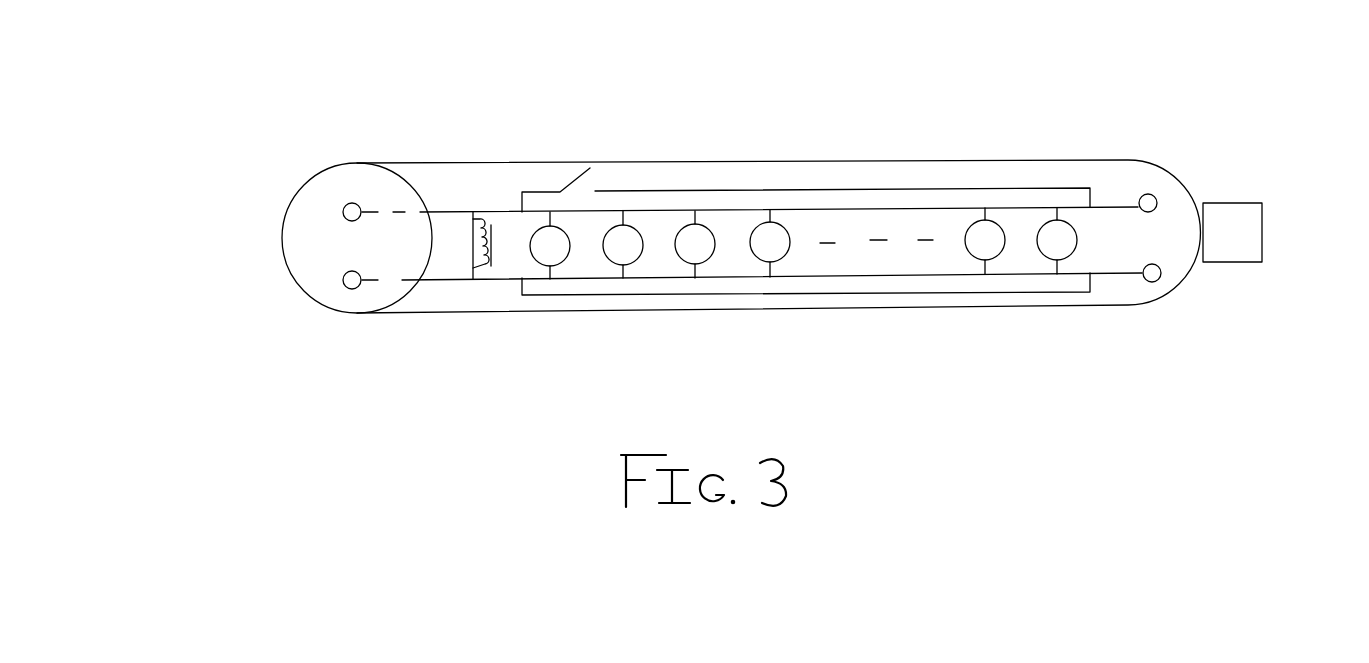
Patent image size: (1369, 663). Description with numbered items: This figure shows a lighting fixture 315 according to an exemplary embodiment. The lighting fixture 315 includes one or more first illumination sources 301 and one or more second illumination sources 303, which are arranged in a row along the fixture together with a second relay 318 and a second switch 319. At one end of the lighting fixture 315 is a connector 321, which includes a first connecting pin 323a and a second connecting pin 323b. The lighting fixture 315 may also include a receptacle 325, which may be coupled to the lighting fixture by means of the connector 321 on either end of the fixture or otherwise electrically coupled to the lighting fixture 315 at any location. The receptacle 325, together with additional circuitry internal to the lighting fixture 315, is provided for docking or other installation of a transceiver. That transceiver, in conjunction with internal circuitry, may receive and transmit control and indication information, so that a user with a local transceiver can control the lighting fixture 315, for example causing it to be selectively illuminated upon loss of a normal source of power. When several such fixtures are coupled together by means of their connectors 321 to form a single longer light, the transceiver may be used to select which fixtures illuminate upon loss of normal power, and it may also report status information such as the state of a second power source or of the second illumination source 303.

The lighting fixture 315 is at (895, 75).
The connector 321 is at (303, 183).
The first connecting pin 323a is at (355, 222).
The second connecting pin 323b is at (352, 268).
The second relay 318 is at (465, 245).
The second switch 319 is at (598, 178).
The first illumination source 301 is at (562, 262).
The second illumination source 303 is at (635, 261).
The receptacle 325 is at (1262, 233).